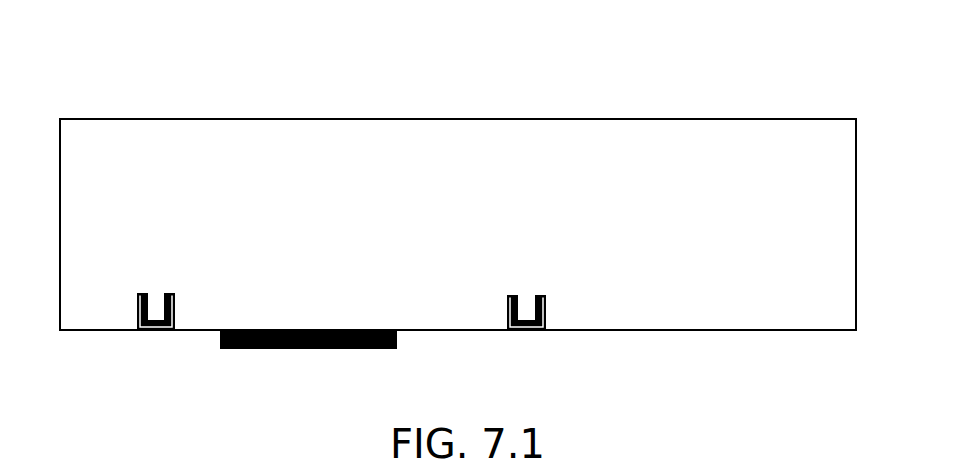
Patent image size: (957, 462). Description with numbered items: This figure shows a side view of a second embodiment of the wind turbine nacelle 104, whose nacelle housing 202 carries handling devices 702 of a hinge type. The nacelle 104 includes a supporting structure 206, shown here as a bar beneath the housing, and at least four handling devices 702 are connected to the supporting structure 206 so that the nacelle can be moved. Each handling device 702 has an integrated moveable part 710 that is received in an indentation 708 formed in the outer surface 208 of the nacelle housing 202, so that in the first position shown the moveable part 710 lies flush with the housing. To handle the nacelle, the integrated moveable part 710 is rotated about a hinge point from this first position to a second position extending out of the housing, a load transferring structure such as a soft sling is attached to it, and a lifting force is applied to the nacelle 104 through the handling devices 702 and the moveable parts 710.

The nacelle 104 is at (171, 49).
The nacelle housing 202 is at (752, 331).
The supporting structure 206 is at (263, 349).
The outer surface 208 is at (590, 132).
The handling devices 702 is at (145, 351).
The indentation 708 is at (510, 297).
The integrated moveable part 710 is at (143, 296).